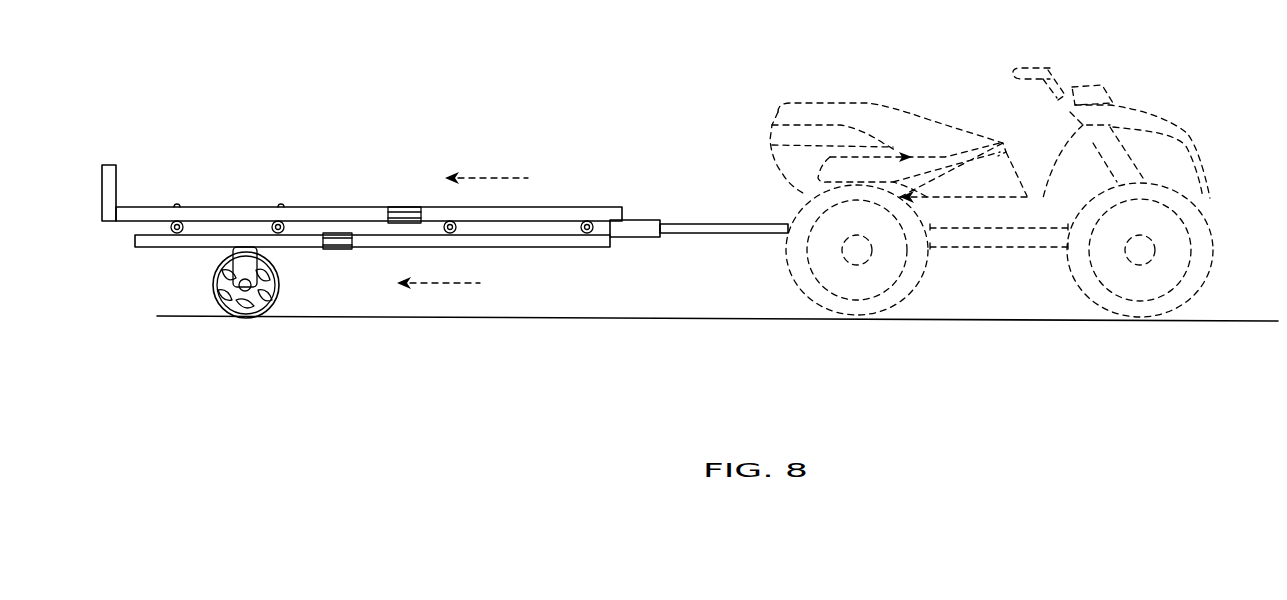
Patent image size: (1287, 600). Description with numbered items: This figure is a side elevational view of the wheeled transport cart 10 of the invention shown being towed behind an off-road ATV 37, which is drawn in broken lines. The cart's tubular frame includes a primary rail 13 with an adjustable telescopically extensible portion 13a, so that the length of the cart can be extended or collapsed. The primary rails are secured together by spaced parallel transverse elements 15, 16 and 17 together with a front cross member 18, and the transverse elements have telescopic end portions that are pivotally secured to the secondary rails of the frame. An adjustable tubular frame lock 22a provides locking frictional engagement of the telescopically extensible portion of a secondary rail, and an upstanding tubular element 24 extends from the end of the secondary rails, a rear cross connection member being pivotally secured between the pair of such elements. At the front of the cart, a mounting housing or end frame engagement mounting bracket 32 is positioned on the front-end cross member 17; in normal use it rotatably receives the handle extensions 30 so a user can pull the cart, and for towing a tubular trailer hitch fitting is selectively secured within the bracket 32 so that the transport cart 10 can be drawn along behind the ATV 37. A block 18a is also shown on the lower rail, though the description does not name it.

The wheeled transport cart 10 is at (490, 100).
The primary rail 13 is at (198, 247).
The telescopically extensible portion 13a is at (524, 248).
The transverse element 15 is at (170, 230).
The transverse element 16 is at (282, 204).
The transverse element 17 is at (444, 230).
The front cross member 18 is at (595, 230).
The stop block 18a is at (332, 250).
The adjustable tubular frame lock 22a is at (404, 205).
The upstanding tubular element 24 is at (117, 197).
The handle extension 30 is at (708, 223).
The mounting housing 32 is at (625, 219).
The off-road ATV 37 is at (1150, 70).